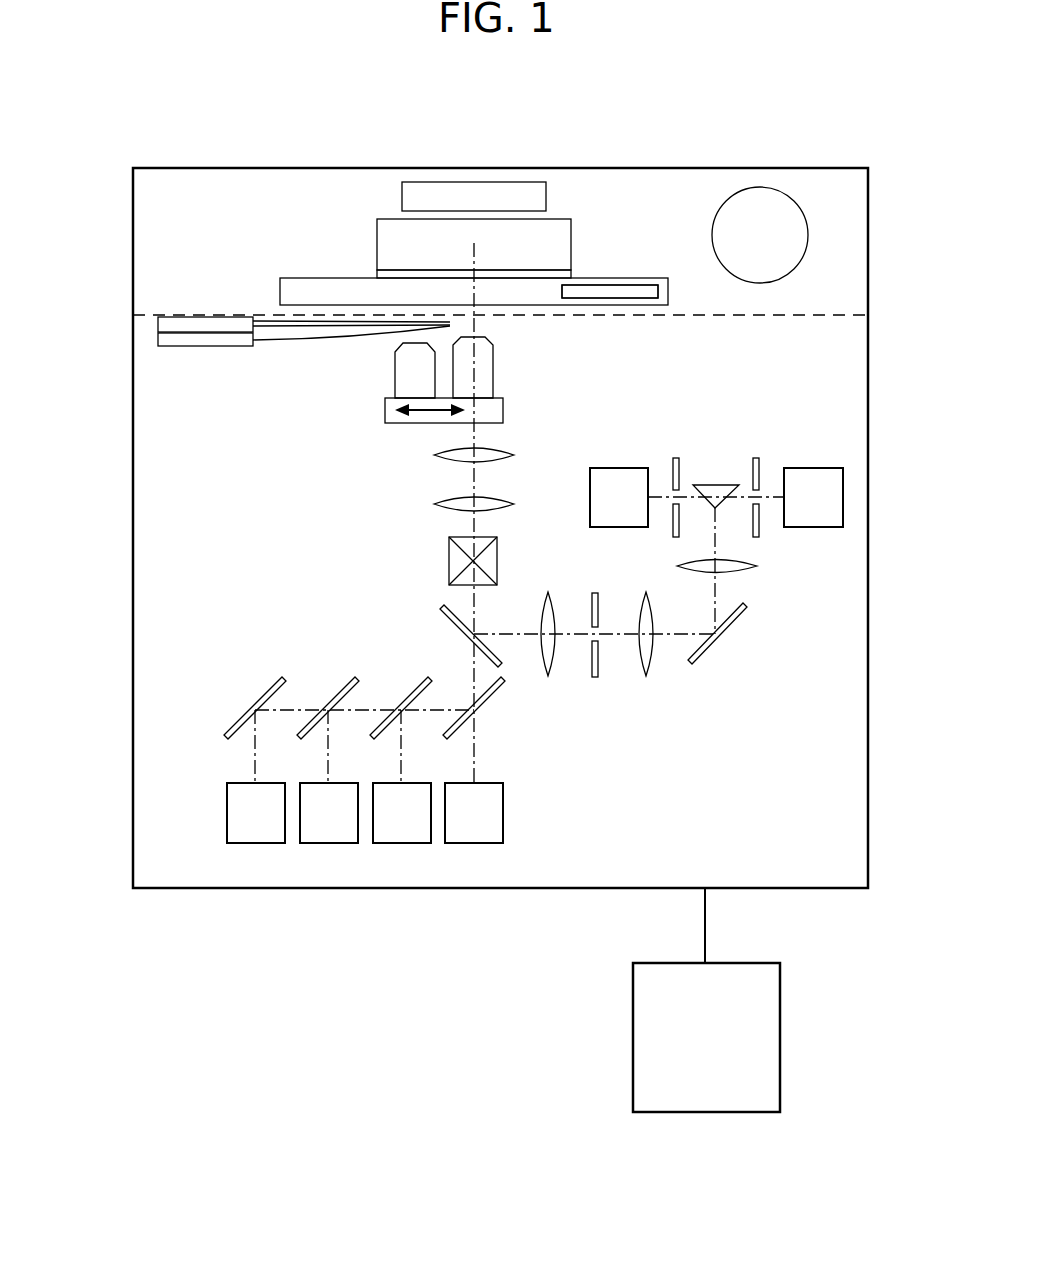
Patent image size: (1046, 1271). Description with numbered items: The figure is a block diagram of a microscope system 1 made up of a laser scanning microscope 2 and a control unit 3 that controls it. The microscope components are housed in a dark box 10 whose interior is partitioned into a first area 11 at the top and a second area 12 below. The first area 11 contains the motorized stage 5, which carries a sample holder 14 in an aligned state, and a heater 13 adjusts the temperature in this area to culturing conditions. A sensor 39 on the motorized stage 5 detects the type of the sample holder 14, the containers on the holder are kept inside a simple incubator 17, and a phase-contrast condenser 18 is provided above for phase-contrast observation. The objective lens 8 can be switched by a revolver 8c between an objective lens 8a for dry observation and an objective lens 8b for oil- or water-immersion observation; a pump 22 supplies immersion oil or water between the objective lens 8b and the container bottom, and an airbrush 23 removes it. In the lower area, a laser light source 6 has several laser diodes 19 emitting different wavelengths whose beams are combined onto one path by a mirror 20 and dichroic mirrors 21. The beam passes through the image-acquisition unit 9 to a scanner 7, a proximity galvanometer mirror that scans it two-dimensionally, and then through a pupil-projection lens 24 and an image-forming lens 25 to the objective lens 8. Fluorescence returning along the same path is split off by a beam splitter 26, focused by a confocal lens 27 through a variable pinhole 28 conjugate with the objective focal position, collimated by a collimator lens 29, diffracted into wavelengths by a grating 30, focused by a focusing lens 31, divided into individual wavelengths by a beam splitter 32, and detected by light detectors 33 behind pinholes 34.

The microscope system 1 is at (676, 131).
The laser scanning microscope 2 is at (365, 861).
The control unit 3 is at (633, 1027).
The motorized stage 5 is at (616, 285).
The laser light source 6 is at (411, 717).
The scanner 7 is at (449, 560).
The objective lens 8 is at (453, 376).
The objective lens for dry observation 8a is at (395, 372).
The objective lens for oil-immersion or water-immersion observation 8b is at (493, 368).
The revolver 8c is at (503, 410).
The image-acquisition unit 9 is at (687, 576).
The dark box 10 is at (806, 168).
The first area 11 is at (155, 245).
The second area 12 is at (155, 432).
The heater 13 is at (712, 222).
The sample holder 14 is at (376, 273).
The simple incubator 17 is at (377, 232).
The phase-contrast condenser 18 is at (478, 182).
The laser diodes 19 is at (258, 843).
The mirror 20 is at (262, 690).
The dichroic mirror 21 is at (335, 690).
The pump 22 is at (228, 347).
The airbrush 23 is at (200, 318).
The pupil-projection lens 24 is at (434, 504).
The image-forming lens 25 is at (434, 455).
The beam splitter 26 is at (442, 607).
The confocal lens 27 is at (548, 593).
The variable pinhole 28 is at (595, 677).
The collimator lens 29 is at (646, 677).
The grating 30 is at (733, 624).
The focusing lens 31 is at (757, 566).
The beam splitter 32 is at (710, 485).
The light detectors 33 is at (620, 468).
The pinholes 34 is at (676, 458).
The sensor 39 is at (658, 292).